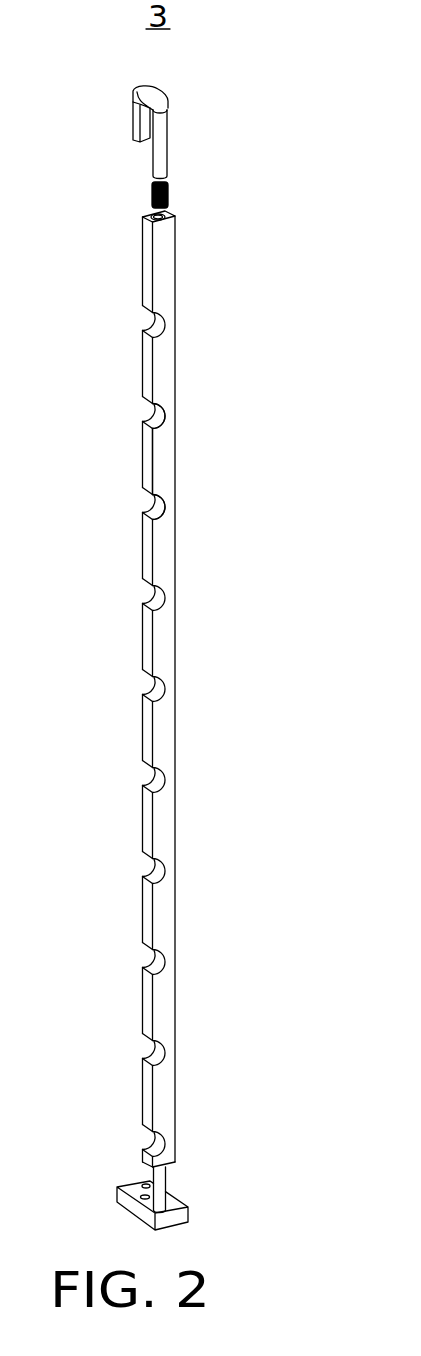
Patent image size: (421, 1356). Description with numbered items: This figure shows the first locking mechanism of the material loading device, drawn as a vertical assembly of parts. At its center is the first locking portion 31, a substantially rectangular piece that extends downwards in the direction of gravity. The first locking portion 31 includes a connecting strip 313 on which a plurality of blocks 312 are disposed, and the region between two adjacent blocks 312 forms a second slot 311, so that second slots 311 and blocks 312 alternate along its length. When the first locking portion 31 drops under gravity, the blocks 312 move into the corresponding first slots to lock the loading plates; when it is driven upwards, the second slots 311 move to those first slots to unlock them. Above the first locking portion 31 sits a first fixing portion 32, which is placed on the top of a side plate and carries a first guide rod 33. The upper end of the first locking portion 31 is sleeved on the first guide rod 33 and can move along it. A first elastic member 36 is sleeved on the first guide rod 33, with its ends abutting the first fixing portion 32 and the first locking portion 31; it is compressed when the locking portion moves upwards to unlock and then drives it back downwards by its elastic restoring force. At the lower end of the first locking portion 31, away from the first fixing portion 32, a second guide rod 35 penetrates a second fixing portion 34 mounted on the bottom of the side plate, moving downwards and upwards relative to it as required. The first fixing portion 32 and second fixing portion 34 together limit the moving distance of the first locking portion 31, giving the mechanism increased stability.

The first locking portion 31 is at (260, 390).
The second slot 311 is at (168, 416).
The block 312 is at (162, 452).
The connecting strip 313 is at (172, 508).
The first fixing portion 32 is at (160, 100).
The first guide rod 33 is at (160, 143).
The second fixing portion 34 is at (167, 1217).
The second guide rod 35 is at (160, 1188).
The first elastic member 36 is at (170, 195).